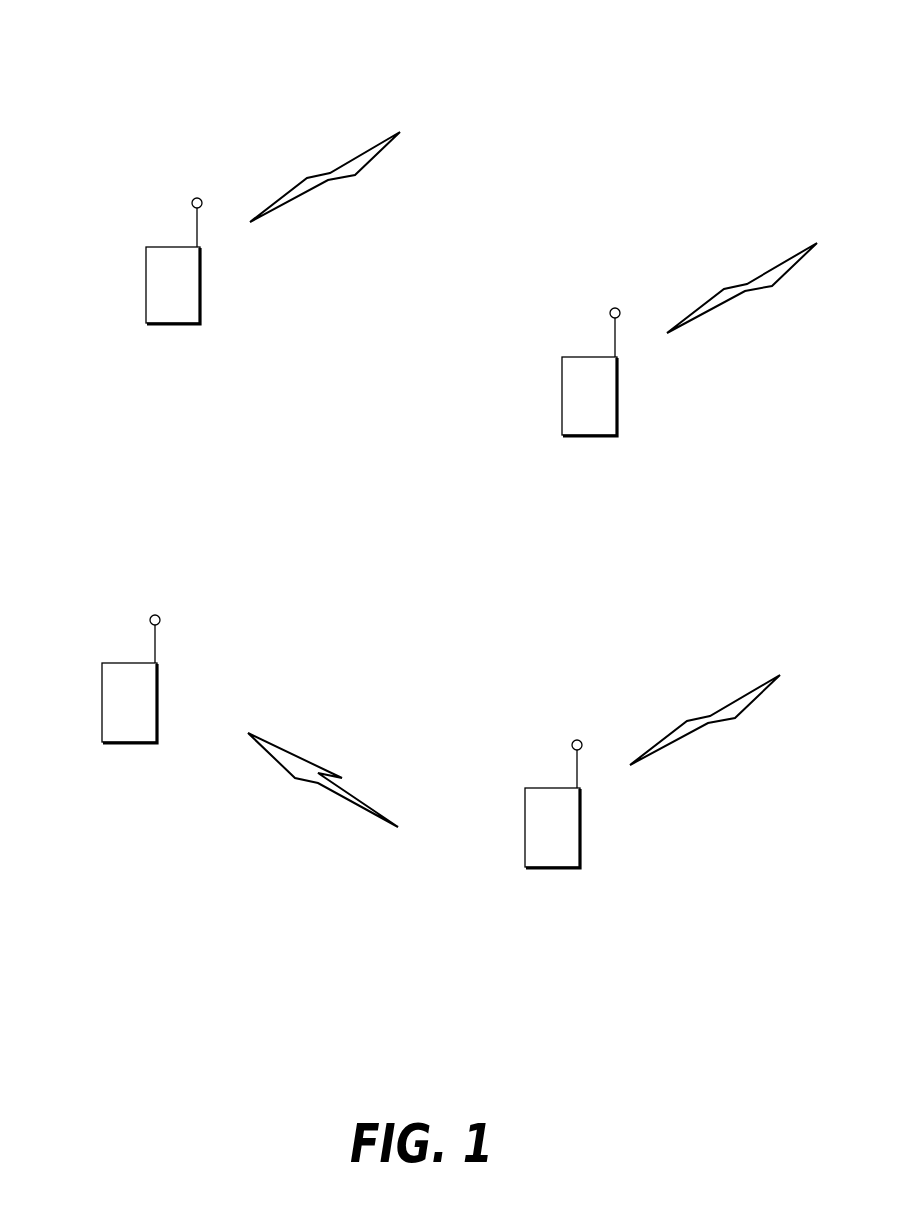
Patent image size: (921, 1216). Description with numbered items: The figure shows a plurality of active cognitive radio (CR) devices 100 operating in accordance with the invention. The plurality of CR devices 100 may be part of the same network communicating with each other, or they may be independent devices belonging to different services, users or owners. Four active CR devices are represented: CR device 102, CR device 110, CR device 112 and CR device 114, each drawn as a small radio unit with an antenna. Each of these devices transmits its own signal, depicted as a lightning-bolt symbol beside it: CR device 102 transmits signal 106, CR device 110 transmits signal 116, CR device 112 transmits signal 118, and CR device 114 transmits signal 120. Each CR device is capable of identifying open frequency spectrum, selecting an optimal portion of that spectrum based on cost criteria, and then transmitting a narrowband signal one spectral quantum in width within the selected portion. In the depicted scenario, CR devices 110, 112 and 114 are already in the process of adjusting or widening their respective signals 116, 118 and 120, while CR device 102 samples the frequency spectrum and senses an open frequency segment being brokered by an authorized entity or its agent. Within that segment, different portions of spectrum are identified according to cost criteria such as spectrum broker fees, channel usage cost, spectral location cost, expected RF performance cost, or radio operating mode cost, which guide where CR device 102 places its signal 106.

The plurality of active cognitive radio (CR) devices 100 is at (55, 48).
The active CR device 102 is at (146, 285).
The signal 106 is at (355, 156).
The active CR device 110 is at (102, 702).
The active CR device 112 is at (525, 827).
The active CR device 114 is at (562, 395).
The signal 116 is at (297, 753).
The signal 118 is at (733, 692).
The signal 120 is at (772, 262).